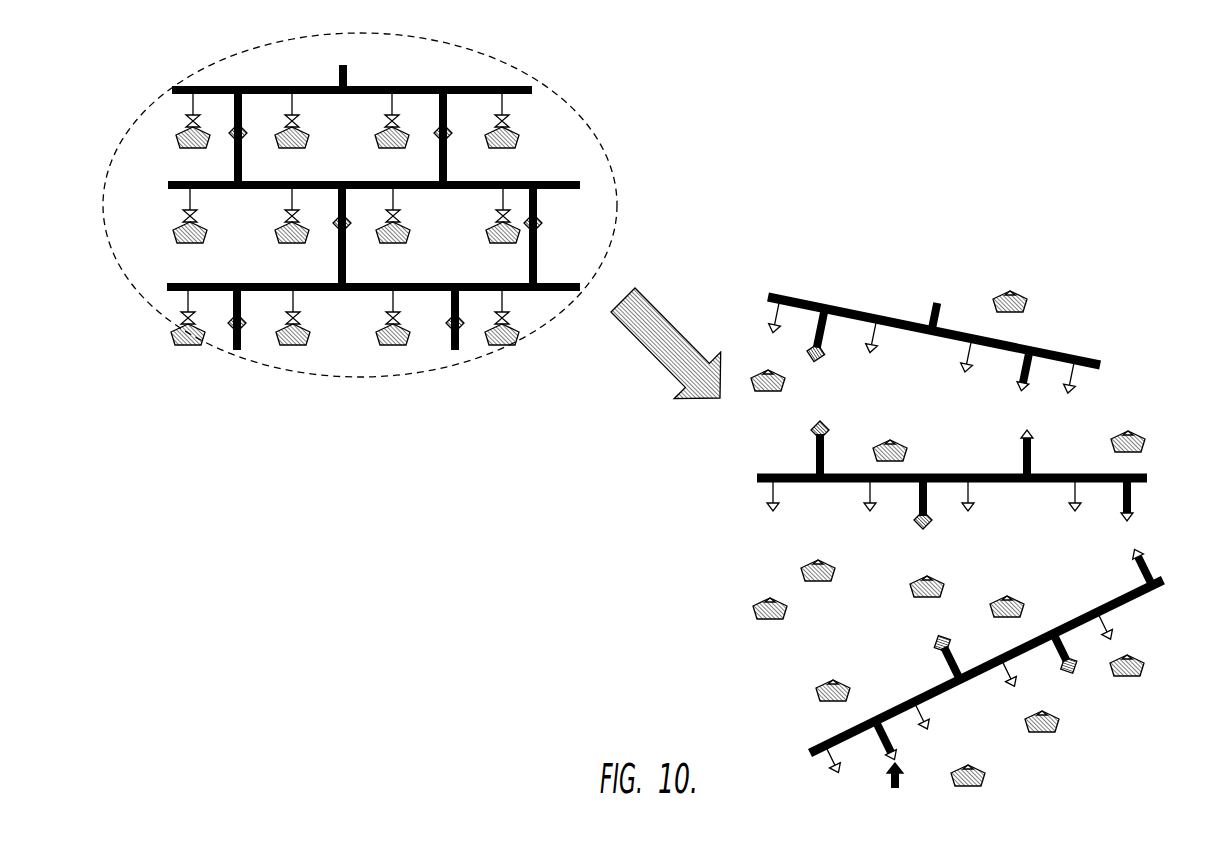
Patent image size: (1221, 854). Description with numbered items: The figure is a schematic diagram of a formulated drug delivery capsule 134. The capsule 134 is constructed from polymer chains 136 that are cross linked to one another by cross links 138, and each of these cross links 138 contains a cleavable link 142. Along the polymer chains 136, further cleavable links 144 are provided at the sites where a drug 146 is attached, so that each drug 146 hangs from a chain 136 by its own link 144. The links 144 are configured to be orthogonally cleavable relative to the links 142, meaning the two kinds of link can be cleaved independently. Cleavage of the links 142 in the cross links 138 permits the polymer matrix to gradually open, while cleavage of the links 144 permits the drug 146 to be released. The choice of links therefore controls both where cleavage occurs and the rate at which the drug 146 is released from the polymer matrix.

The drug delivery capsule 134 is at (507, 61).
The polymer chains 136 is at (402, 86).
The cross links 138 is at (537, 207).
The cleavable links 142 is at (236, 140).
The cleavable links 144 is at (508, 120).
The drug 146 is at (403, 340).